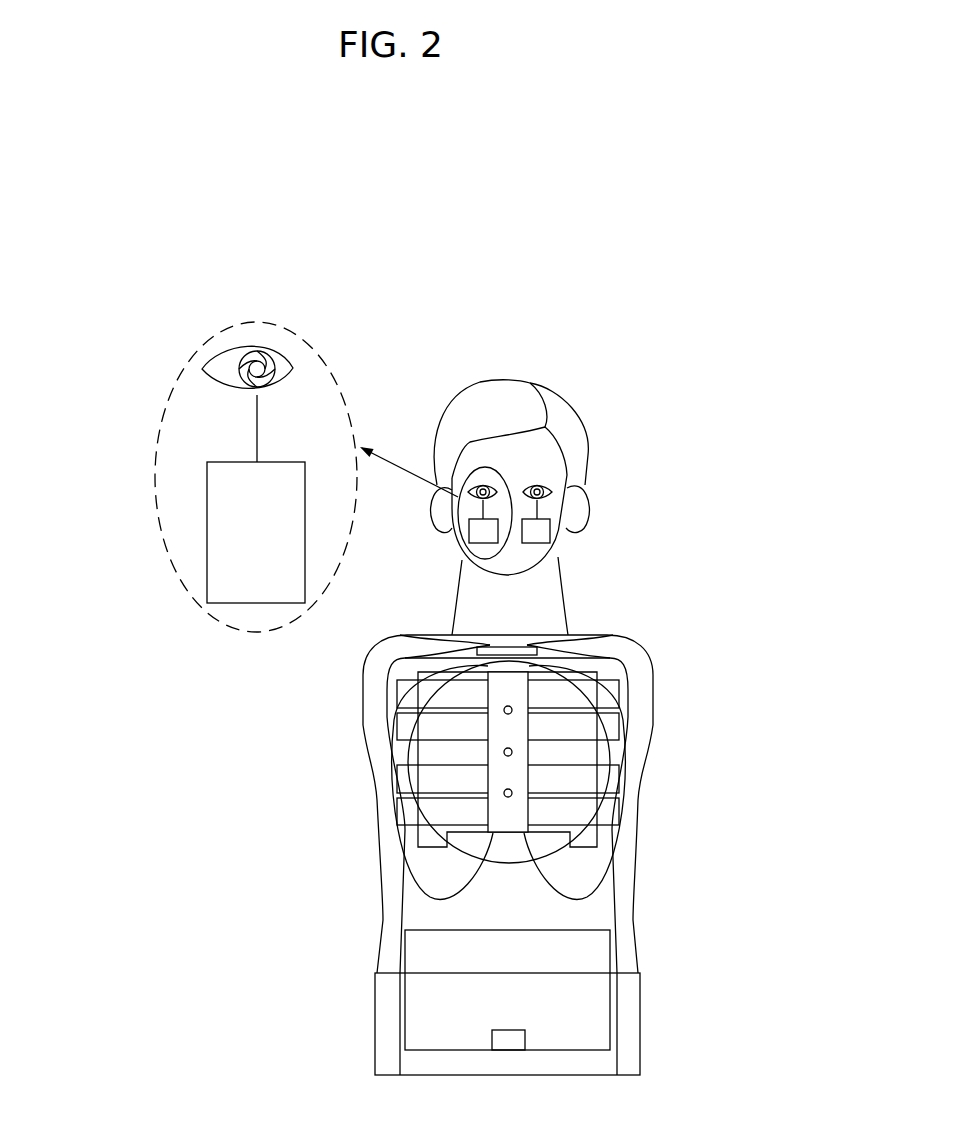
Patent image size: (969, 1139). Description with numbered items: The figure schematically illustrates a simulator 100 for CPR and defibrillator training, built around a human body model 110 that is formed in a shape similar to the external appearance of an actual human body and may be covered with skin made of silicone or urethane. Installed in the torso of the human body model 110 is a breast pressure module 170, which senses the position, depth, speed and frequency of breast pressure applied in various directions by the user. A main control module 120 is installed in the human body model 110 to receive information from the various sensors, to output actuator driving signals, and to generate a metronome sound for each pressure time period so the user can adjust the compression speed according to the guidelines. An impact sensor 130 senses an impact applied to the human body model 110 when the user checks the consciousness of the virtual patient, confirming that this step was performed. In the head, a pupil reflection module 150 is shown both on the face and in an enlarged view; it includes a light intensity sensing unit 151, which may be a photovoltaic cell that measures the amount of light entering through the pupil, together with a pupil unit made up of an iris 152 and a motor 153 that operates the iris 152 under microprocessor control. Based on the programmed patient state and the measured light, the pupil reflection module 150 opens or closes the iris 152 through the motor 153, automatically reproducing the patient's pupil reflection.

The simulator 100 is at (602, 368).
The human body model 110 is at (632, 952).
The main control module 120 is at (417, 953).
The impact sensor 130 is at (495, 1037).
The pupil reflection module 150 is at (167, 385).
The light intensity sensing unit 151 is at (262, 371).
The iris 152 is at (249, 353).
The motor 153 is at (225, 530).
The breast pressure module 170 is at (610, 775).